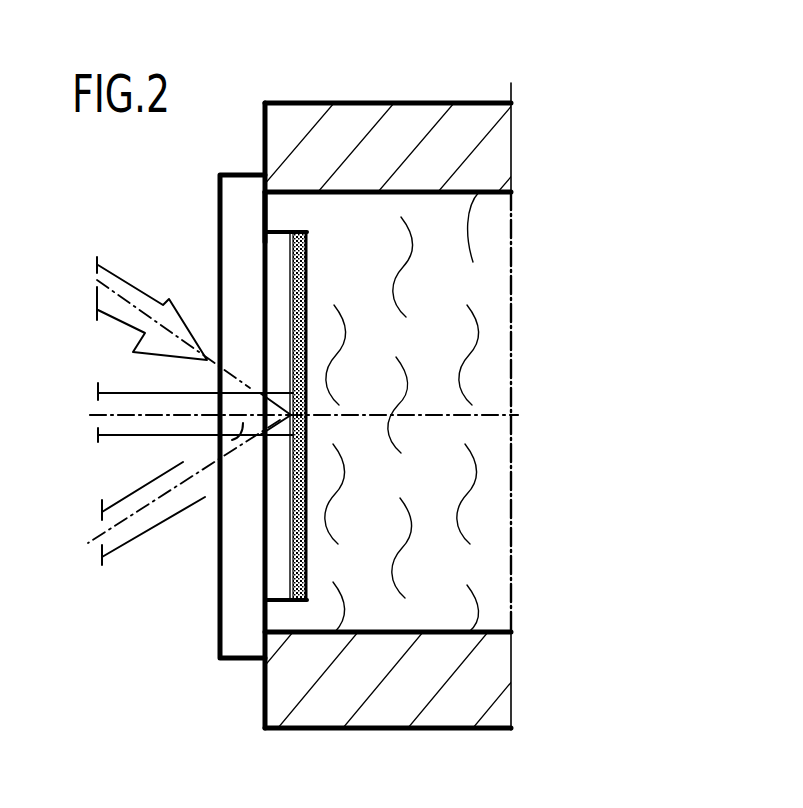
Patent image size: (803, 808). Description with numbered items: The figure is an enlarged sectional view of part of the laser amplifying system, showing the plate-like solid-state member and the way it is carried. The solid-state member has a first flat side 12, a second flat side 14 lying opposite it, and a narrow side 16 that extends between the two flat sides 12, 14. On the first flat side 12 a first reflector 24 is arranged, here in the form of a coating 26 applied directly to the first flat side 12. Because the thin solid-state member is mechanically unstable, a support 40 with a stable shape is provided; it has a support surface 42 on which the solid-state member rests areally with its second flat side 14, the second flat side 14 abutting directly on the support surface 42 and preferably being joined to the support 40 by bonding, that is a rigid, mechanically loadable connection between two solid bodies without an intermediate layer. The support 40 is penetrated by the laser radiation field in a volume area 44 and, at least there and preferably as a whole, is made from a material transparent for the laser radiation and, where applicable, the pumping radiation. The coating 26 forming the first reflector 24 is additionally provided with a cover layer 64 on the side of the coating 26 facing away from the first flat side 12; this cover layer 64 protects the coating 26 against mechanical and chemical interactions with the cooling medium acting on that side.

The first flat side 12 is at (303, 548).
The second flat side 14 is at (262, 548).
The narrow side 16 is at (282, 570).
The first reflector 24 is at (307, 302).
The coating 26 is at (306, 249).
The support 40 is at (217, 530).
The support surface 42 is at (267, 242).
The volume area 44 is at (220, 440).
The cover layer 64 is at (303, 381).